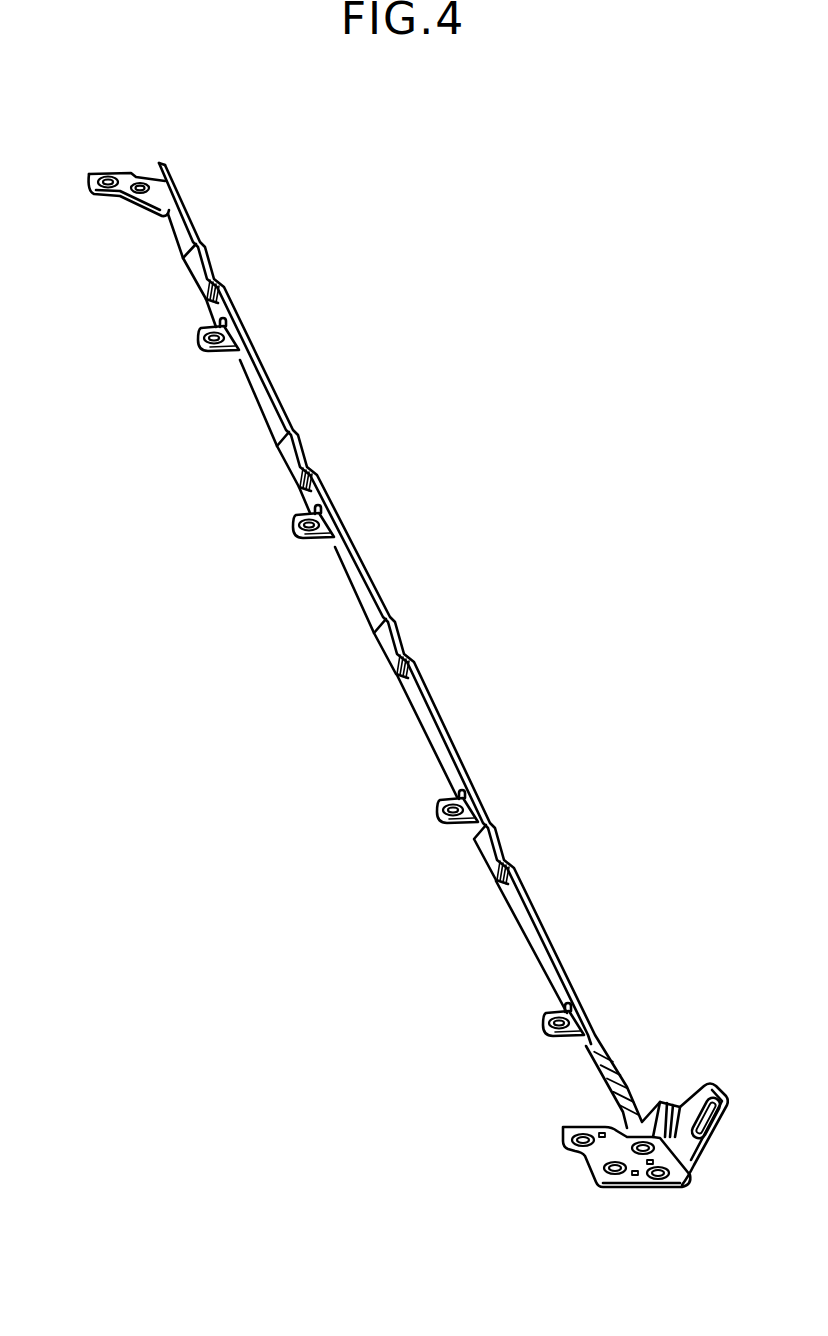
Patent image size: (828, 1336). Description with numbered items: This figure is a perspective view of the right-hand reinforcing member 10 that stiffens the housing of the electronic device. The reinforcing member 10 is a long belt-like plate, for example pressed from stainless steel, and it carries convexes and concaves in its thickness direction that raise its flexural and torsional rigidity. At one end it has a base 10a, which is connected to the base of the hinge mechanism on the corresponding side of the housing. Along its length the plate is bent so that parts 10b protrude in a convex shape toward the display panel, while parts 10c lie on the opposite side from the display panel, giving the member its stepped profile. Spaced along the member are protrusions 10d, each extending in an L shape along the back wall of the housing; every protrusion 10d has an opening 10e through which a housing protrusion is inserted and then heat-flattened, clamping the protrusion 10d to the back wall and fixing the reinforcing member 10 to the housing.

The reinforcing member 10 is at (454, 417).
The base 10a is at (645, 1190).
The part 10b is at (195, 268).
The part 10c is at (262, 368).
The protrusion 10d is at (115, 200).
The opening 10e is at (105, 176).